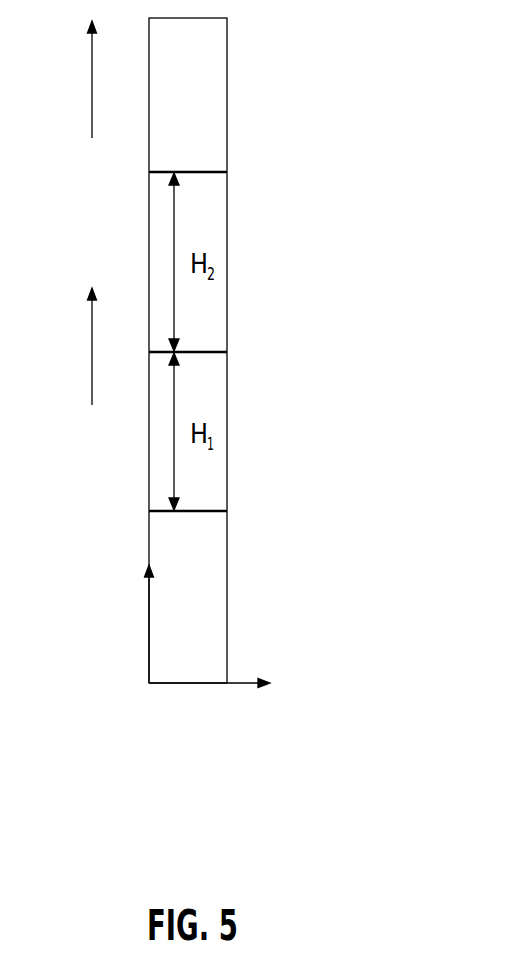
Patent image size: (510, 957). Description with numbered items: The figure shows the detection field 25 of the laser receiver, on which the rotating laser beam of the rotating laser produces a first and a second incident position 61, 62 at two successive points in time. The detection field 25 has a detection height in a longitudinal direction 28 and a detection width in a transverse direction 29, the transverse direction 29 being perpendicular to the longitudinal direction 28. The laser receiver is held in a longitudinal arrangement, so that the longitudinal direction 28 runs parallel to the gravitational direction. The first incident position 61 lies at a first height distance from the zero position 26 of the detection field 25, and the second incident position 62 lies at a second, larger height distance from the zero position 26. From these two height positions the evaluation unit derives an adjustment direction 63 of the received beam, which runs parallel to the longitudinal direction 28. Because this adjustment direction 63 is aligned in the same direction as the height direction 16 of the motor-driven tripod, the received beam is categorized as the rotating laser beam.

The height direction 16 is at (71, 79).
The detection field 25 is at (203, 52).
The zero position 26 is at (216, 355).
The longitudinal direction 28 is at (149, 622).
The transverse direction 29 is at (207, 684).
The first incident position 61 is at (216, 515).
The second incident position 62 is at (216, 175).
The adjustment direction 63 is at (73, 346).